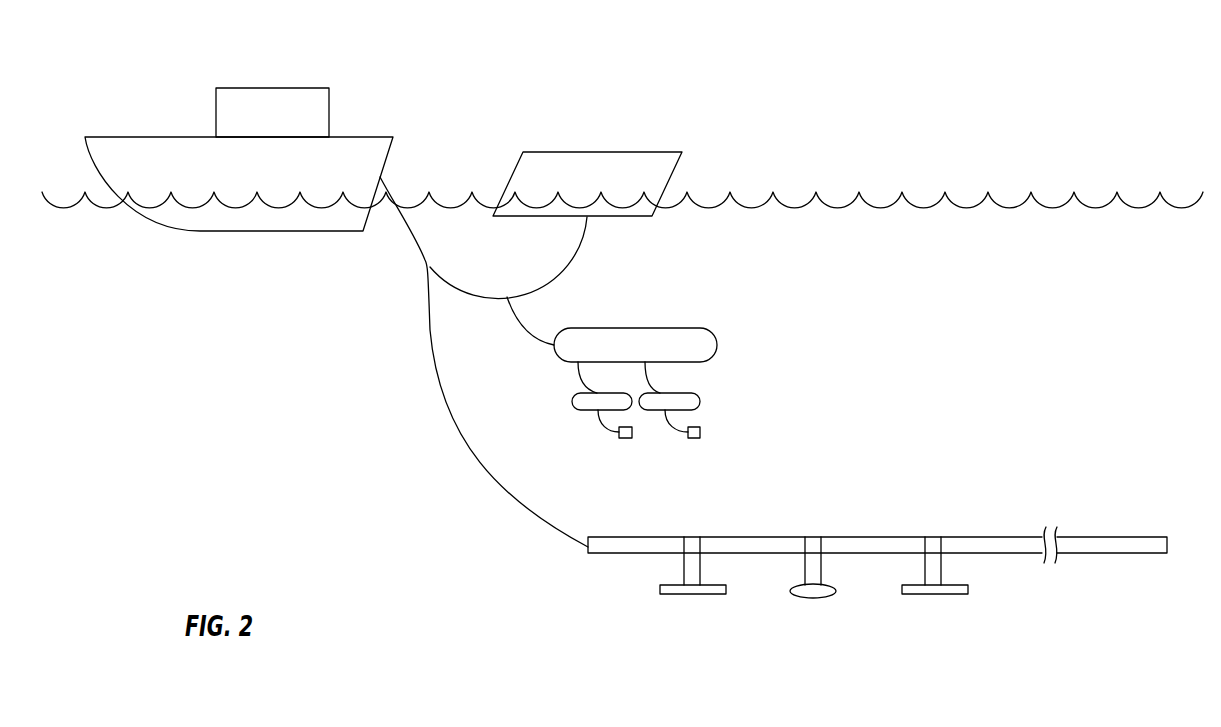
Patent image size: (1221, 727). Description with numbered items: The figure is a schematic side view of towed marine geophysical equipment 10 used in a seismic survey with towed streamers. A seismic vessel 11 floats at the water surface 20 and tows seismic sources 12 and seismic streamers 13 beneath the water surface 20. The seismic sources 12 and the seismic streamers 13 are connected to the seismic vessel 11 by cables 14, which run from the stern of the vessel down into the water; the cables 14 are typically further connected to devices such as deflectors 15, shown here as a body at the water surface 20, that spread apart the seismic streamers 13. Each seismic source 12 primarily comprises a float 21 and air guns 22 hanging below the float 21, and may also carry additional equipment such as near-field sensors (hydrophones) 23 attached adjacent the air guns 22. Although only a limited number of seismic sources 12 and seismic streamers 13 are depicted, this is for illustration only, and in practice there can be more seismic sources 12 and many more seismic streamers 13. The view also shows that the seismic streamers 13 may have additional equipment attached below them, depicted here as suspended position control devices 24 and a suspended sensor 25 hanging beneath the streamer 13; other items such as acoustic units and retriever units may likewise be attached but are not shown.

The towed marine geophysical equipment 10 is at (230, 468).
The seismic vessel 11 is at (252, 88).
The seismic sources 12 is at (803, 457).
The seismic streamers 13 is at (995, 537).
The cables 14 is at (427, 292).
The deflectors 15 is at (560, 152).
The water surface 20 is at (995, 200).
The floats 21 is at (717, 345).
The air guns 22 is at (572, 400).
The near-field sensors (hydrophones) 23 is at (700, 433).
The suspended position control devices 24 is at (693, 594).
The suspended sensors 25 is at (815, 598).